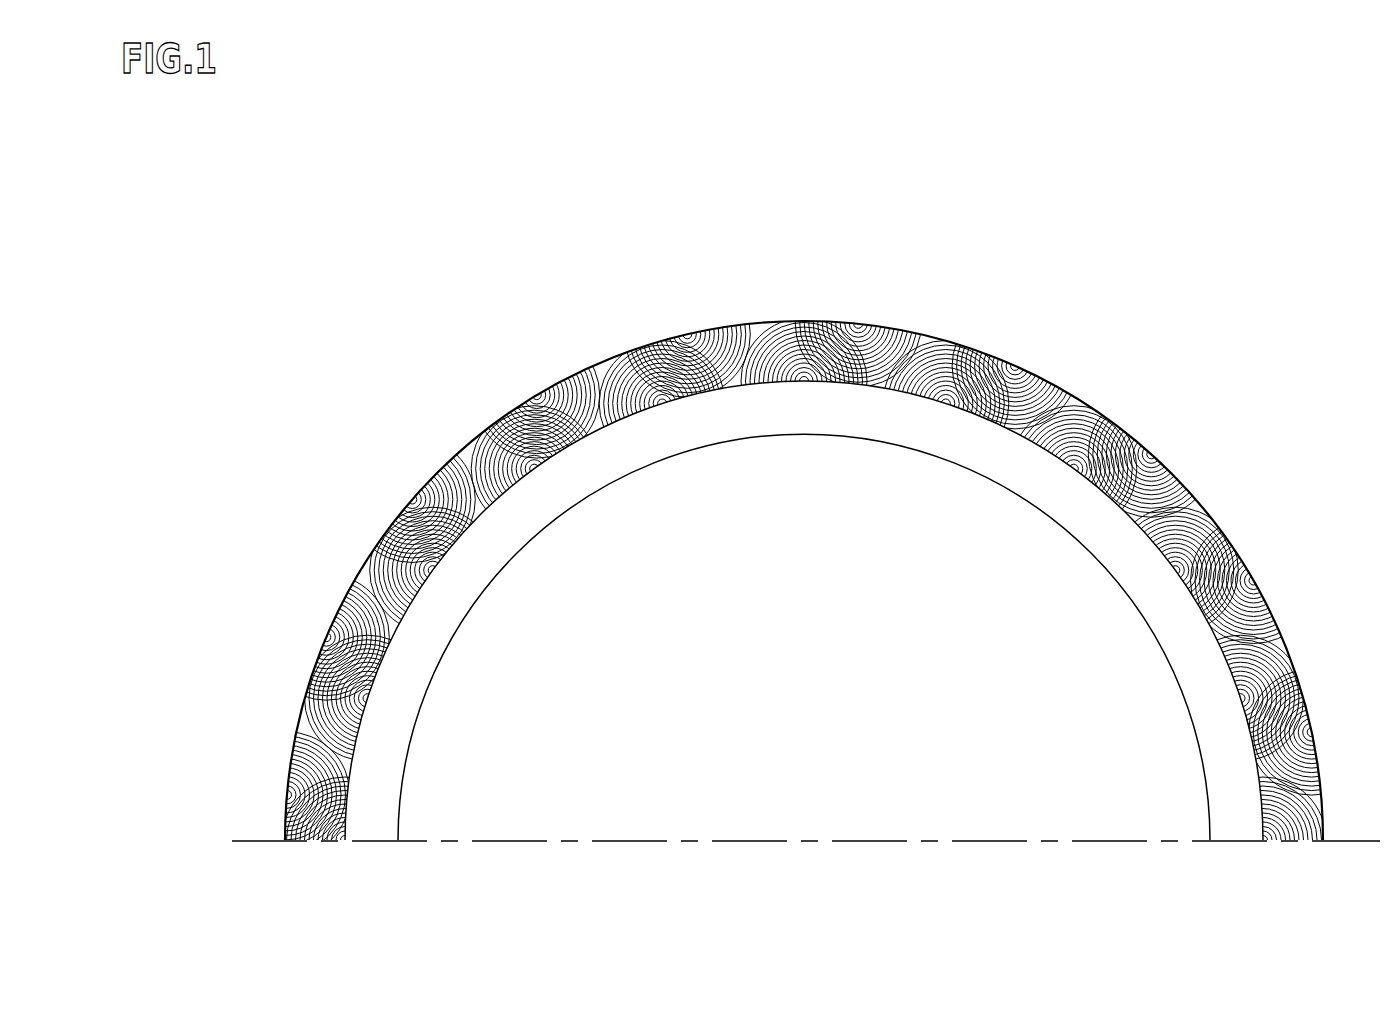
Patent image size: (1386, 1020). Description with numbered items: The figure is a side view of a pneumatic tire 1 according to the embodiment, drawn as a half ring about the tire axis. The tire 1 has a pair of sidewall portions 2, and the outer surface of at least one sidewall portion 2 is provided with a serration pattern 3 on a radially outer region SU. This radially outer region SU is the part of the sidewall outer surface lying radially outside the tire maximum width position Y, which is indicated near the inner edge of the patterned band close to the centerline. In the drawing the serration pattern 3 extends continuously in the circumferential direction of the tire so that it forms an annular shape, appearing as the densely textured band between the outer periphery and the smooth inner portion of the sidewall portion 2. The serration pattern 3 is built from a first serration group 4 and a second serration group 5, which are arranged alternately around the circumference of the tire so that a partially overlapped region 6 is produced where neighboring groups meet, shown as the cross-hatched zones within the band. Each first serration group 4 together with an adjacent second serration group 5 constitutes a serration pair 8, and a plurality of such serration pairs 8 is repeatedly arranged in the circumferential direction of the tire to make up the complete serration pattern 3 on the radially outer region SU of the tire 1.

The pneumatic tire 1 is at (802, 552).
The sidewall portion 2 is at (1095, 522).
The serration pattern 3 is at (799, 552).
The first serration group 4 is at (772, 343).
The second serration group 5 is at (902, 328).
The partially overlapped region 6 is at (815, 343).
The serration pair 8 is at (804, 302).
The radially outer region SU is at (1263, 850).
The tire maximum width position Y is at (1262, 765).